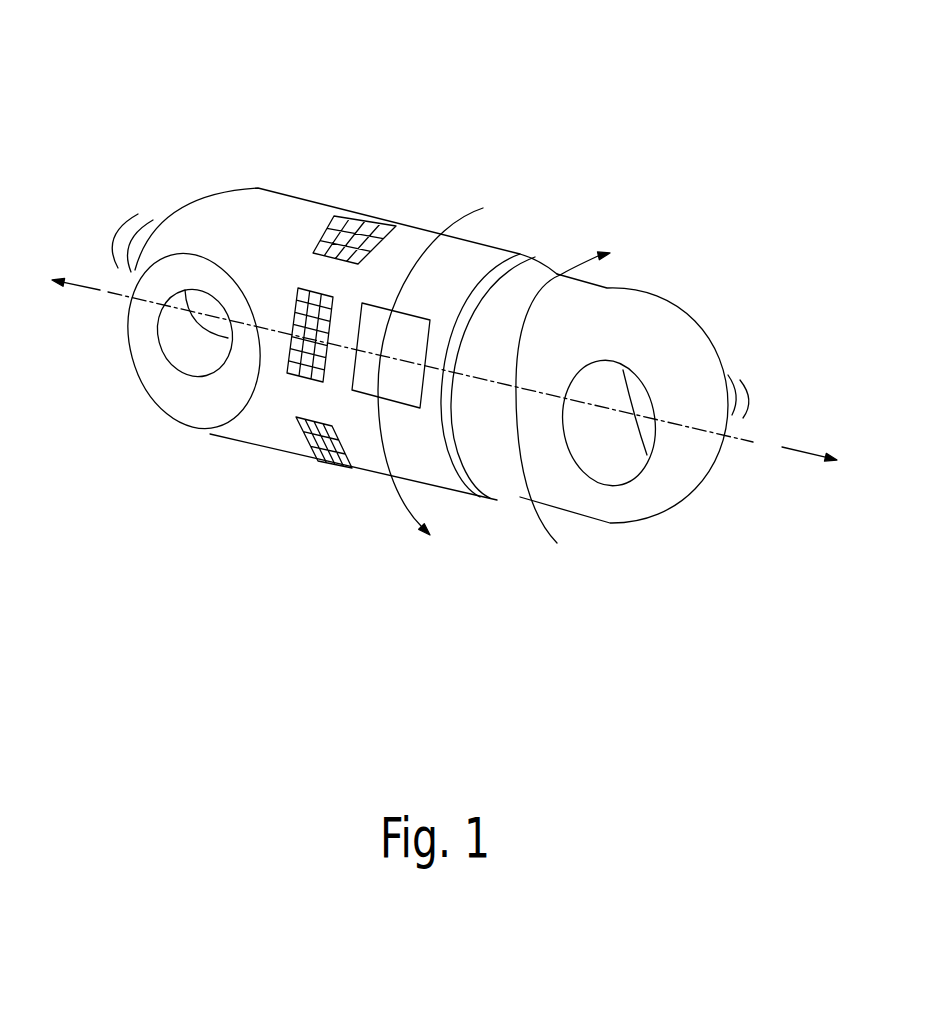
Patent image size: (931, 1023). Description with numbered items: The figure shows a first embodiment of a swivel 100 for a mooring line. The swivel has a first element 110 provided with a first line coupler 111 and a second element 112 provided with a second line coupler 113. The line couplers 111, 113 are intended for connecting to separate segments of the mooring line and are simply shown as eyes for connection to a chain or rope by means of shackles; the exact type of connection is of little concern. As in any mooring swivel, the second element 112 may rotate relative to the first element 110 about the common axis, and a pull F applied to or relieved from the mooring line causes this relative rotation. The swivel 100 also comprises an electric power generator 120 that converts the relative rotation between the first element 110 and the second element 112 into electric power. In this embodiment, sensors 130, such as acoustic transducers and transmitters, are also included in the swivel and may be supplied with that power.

The swivel 100 is at (444, 337).
The first element 110 is at (297, 217).
The first line coupler 111 is at (171, 378).
The second element 112 is at (500, 463).
The second line coupler 113 is at (663, 352).
The electric power generator 120 is at (415, 327).
The sensors 130 is at (324, 462).